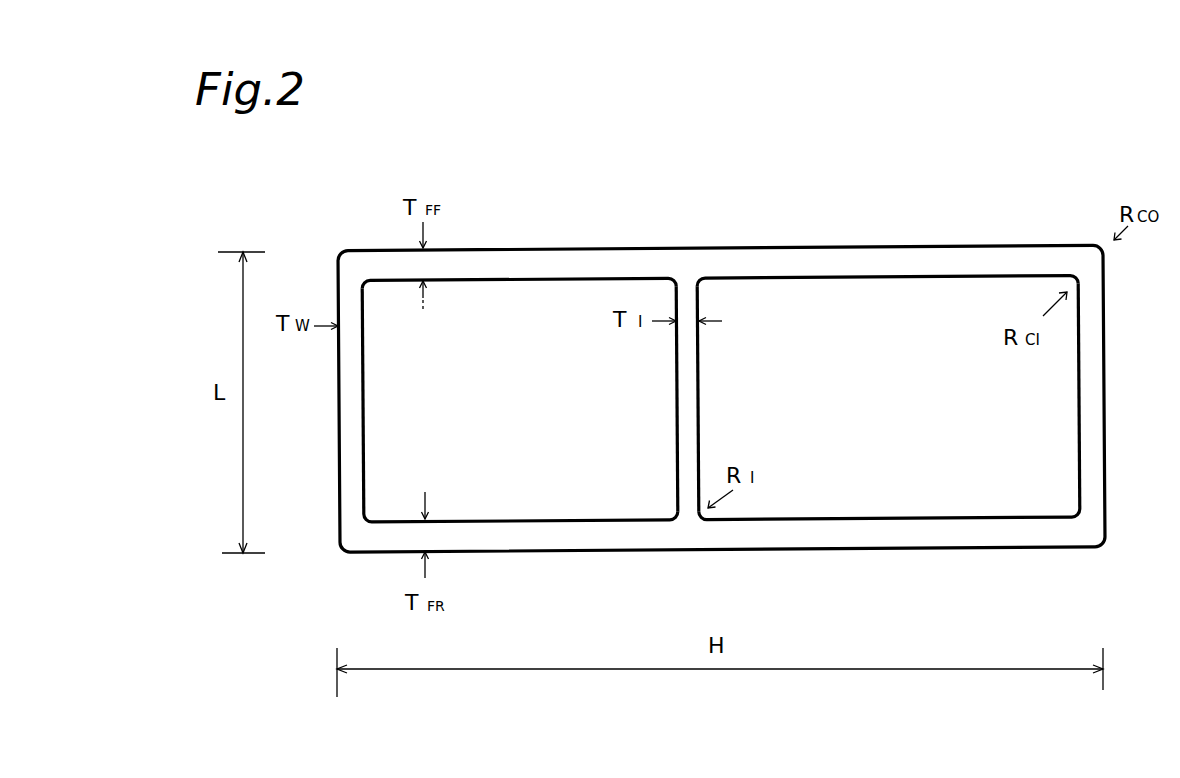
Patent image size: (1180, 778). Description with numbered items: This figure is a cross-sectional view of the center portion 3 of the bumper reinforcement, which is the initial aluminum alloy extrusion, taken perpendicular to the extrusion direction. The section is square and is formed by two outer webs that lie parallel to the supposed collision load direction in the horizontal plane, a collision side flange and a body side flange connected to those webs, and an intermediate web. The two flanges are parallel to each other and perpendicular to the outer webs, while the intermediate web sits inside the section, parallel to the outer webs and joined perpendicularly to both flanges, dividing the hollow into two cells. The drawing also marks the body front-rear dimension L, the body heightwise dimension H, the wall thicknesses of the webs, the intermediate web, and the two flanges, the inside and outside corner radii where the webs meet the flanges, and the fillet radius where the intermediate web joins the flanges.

The center portion 3 is at (803, 206).